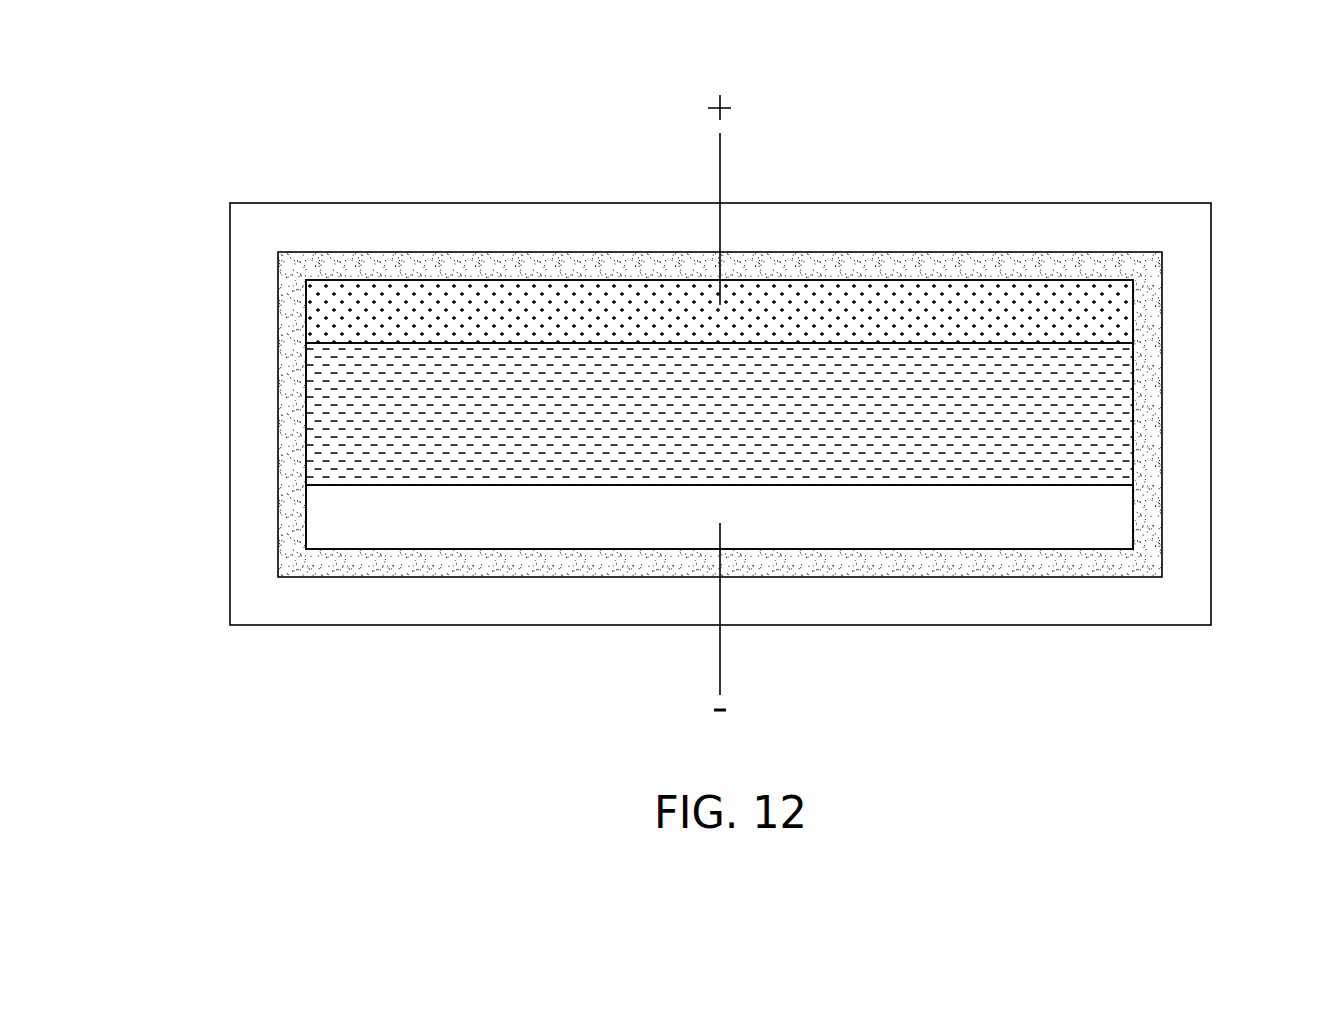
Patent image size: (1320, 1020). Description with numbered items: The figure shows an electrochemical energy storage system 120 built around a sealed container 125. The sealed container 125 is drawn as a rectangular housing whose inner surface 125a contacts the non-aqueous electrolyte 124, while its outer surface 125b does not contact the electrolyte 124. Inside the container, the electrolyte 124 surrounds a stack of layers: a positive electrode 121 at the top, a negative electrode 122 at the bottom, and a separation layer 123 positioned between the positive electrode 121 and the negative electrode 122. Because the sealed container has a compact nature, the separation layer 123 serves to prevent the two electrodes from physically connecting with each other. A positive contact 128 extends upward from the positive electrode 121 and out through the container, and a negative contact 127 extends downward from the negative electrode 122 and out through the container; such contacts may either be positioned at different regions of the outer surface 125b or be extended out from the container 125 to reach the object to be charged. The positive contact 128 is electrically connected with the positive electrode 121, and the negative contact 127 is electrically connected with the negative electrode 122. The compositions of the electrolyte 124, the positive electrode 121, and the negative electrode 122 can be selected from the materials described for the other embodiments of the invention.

The electrochemical energy storage system 120 is at (328, 85).
The positive electrode 121 is at (350, 318).
The negative electrode 122 is at (1092, 515).
The separation layer 123 is at (1092, 412).
The non-aqueous electrolyte 124 is at (924, 266).
The sealed container 125 is at (333, 603).
The inner surface 125a is at (512, 578).
The outer surface 125b is at (417, 628).
The negative contact 127 is at (721, 637).
The positive contact 128 is at (721, 186).